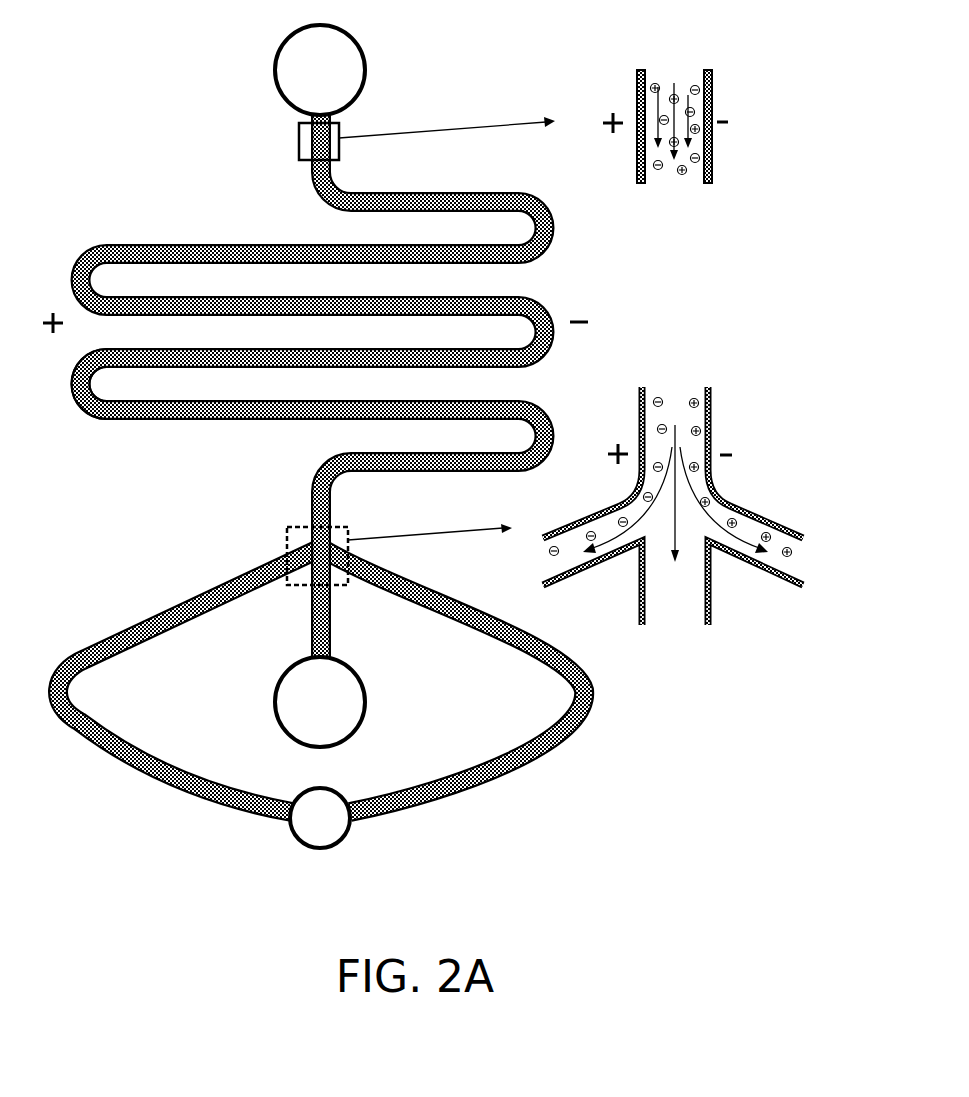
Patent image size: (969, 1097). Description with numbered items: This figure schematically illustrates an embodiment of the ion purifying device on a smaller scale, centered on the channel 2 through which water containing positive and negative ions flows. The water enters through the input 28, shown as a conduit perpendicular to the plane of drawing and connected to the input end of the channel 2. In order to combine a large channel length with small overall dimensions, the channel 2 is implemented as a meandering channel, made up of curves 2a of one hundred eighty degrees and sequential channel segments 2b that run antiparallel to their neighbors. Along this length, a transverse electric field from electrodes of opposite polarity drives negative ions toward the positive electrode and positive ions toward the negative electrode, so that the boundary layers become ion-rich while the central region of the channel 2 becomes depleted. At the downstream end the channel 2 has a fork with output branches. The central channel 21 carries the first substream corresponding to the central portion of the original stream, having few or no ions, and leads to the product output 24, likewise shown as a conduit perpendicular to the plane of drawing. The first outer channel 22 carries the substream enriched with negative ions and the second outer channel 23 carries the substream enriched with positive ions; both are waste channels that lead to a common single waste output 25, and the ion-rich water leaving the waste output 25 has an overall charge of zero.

The channel 2 is at (555, 233).
The curves 2a is at (72, 381).
The channel segments 2b is at (207, 358).
The central channel 21 is at (323, 618).
The first outer channel 22 is at (150, 768).
The second outer channel 23 is at (492, 765).
The product output 24 is at (365, 701).
The waste output 25 is at (343, 840).
The input 28 is at (357, 43).